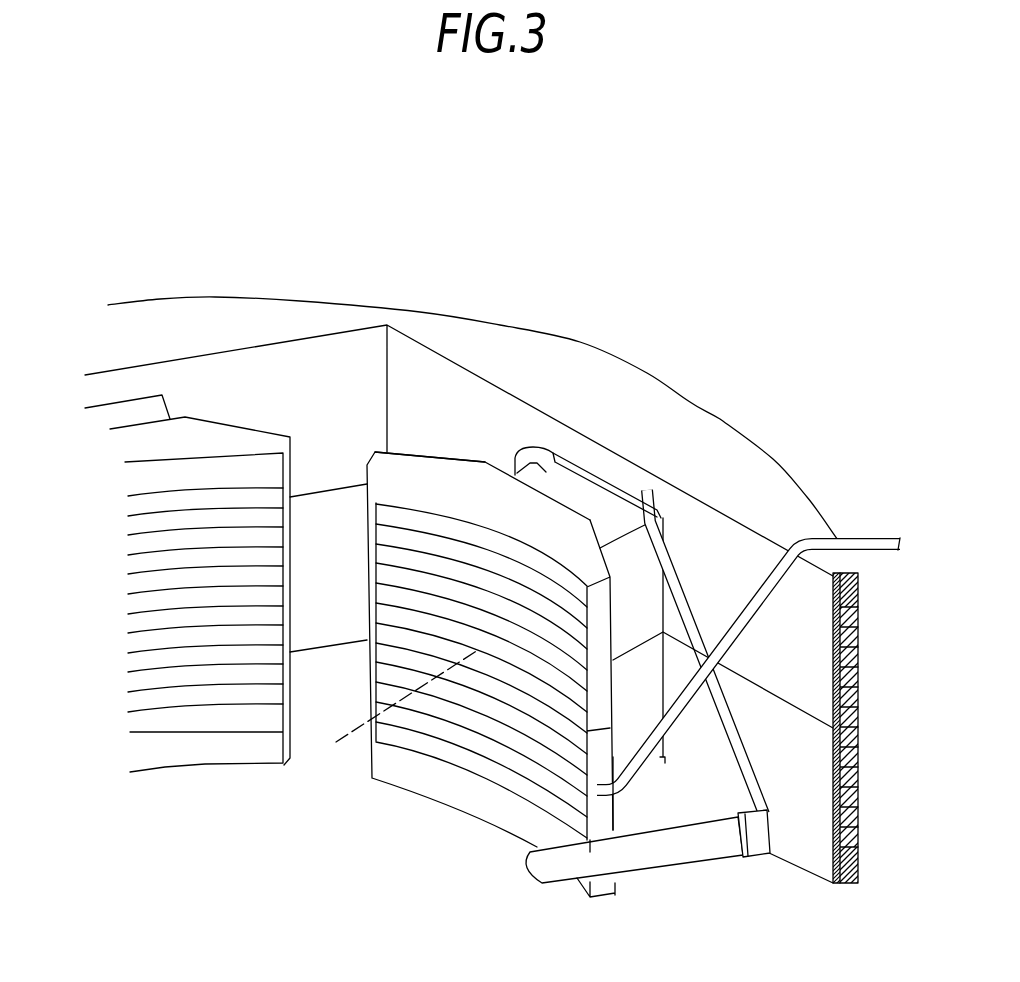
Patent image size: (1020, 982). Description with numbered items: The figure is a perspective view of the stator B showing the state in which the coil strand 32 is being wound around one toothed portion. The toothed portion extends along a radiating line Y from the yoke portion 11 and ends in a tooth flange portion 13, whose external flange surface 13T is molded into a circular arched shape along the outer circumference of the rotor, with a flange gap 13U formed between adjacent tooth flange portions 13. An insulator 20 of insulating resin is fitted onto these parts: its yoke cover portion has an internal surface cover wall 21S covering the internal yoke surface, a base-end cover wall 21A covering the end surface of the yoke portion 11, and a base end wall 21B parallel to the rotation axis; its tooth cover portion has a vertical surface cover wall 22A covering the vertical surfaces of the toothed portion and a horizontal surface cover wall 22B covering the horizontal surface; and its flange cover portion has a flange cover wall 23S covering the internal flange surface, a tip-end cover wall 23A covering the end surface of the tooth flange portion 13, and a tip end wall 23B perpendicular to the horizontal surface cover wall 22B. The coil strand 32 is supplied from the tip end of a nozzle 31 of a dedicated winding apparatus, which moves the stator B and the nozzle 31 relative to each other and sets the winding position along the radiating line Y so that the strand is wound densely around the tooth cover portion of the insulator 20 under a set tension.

The yoke portion 11 is at (860, 715).
The tooth flange portion 13 is at (208, 753).
The external flange surface 13T is at (180, 700).
The flange gap 13U is at (323, 780).
The insulator 20 is at (858, 579).
The base-end cover wall 21A is at (485, 345).
The base end wall 21B is at (570, 525).
The internal surface cover wall 21S is at (712, 532).
The vertical surface cover wall 22A is at (643, 573).
The horizontal surface cover wall 22B is at (545, 478).
The tip-end cover wall 23A is at (600, 470).
The tip end wall 23B is at (566, 528).
The flange cover wall 23S is at (415, 455).
The nozzle 31 is at (660, 855).
The coil strand 32 is at (836, 538).
The stator B is at (264, 268).
The radiating line Y is at (397, 703).